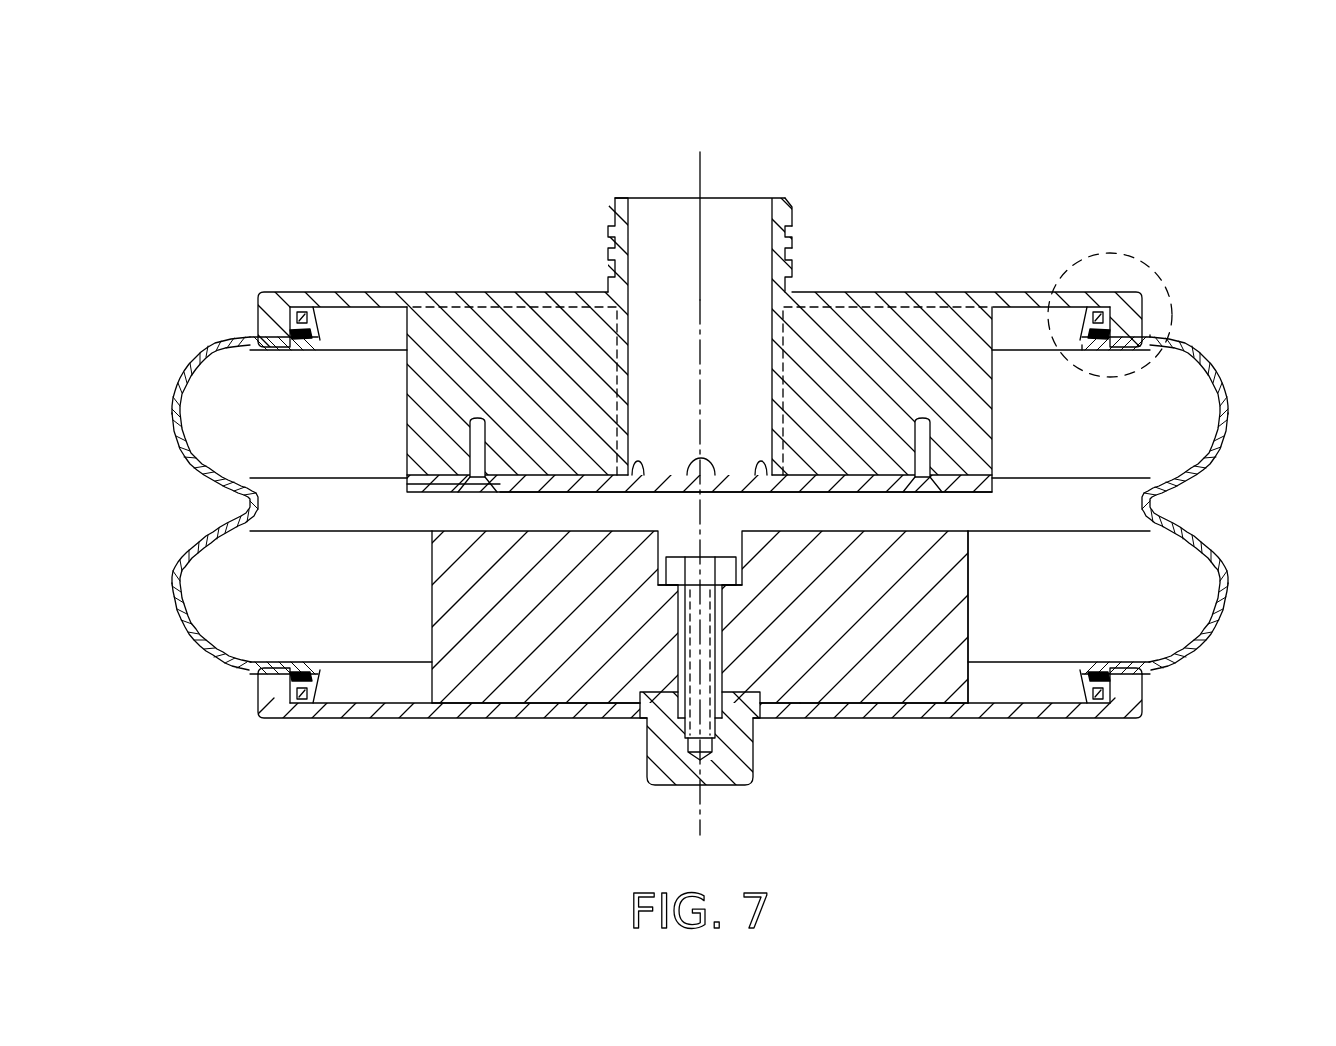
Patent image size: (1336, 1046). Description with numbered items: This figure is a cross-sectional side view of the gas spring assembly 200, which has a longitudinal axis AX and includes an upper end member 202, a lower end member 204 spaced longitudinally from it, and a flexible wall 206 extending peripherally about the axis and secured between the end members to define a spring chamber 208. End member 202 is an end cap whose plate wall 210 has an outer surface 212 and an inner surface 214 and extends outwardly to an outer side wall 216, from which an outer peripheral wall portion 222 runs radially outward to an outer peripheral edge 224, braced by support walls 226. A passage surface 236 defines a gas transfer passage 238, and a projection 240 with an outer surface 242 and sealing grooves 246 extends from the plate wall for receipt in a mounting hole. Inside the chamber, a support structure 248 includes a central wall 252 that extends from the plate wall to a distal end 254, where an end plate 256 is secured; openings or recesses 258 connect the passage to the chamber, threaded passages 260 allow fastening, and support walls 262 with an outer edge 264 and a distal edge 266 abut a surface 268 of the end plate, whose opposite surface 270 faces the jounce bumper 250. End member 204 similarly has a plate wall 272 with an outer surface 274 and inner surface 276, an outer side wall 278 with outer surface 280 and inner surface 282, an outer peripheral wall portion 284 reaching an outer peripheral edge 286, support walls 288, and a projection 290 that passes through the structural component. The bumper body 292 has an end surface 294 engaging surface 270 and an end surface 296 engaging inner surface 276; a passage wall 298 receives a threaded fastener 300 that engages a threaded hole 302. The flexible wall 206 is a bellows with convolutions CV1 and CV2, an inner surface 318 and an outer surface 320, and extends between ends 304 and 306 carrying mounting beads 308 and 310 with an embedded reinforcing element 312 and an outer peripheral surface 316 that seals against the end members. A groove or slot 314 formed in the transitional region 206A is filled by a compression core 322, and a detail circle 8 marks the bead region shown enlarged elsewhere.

The gas spring assembly 200 is at (1228, 240).
The end member 202 is at (353, 280).
The end member 204 is at (372, 732).
The flexible wall 206 is at (1252, 402).
The transitional region 206A is at (1080, 340).
The spring chamber 208 is at (228, 380).
The plate wall 210 is at (410, 300).
The outer surface 212 is at (460, 290).
The inner surface 214 is at (1000, 305).
The outer side wall 216 is at (262, 320).
The outer peripheral wall portion 222 is at (258, 330).
The outer peripheral edge 224 is at (1122, 323).
The support walls 226 is at (1135, 312).
The passage surface 236 is at (632, 252).
The gas transfer passage 238 is at (742, 203).
The projection 240 is at (783, 182).
The outer surface 242 is at (794, 235).
The grooves 246 is at (794, 266).
The support structure 248 is at (395, 443).
The jounce bumper 250 is at (420, 580).
The central wall 252 is at (595, 305).
The distal end 254 is at (716, 466).
The end plate 256 is at (955, 487).
The openings or recesses 258 is at (645, 466).
The threaded passages 260 is at (930, 440).
The support walls 262 is at (430, 414).
The outer edge 264 is at (407, 382).
The distal edge 266 is at (405, 478).
The surface 268 is at (540, 477).
The surface 270 is at (618, 493).
The plate wall 272 is at (532, 704).
The outer surface 274 is at (490, 717).
The inner surface 276 is at (562, 704).
The outer side wall 278 is at (1100, 719).
The outer surface 280 is at (1145, 712).
The inner surface 282 is at (262, 704).
The outer peripheral wall portion 284 is at (265, 690).
The outer peripheral edge 286 is at (1137, 690).
The support walls 288 is at (290, 700).
The projection 290 is at (742, 735).
The bumper body 292 is at (897, 680).
The end surface 294 is at (925, 520).
The end surface 296 is at (812, 703).
The passage wall 298 is at (660, 655).
The threaded fastener 300 is at (720, 556).
The threaded hole 302 is at (662, 758).
The end 304 is at (1071, 365).
The end 306 is at (297, 644).
The mounting bead 308 is at (308, 310).
The mounting bead 310 is at (315, 690).
The reinforcing element 312 is at (1096, 315).
The groove or slot 314 is at (334, 328).
The outer peripheral surface 316 is at (1118, 300).
The inner surface 318 is at (1226, 582).
The outer surface 320 is at (1228, 440).
The compression cores 322 is at (1093, 342).
The detail circle for FIG. 8 is at (1102, 254).
The longitudinal axis AX is at (672, 506).
The convolution CV1 is at (115, 421).
The convolution CV2 is at (115, 598).